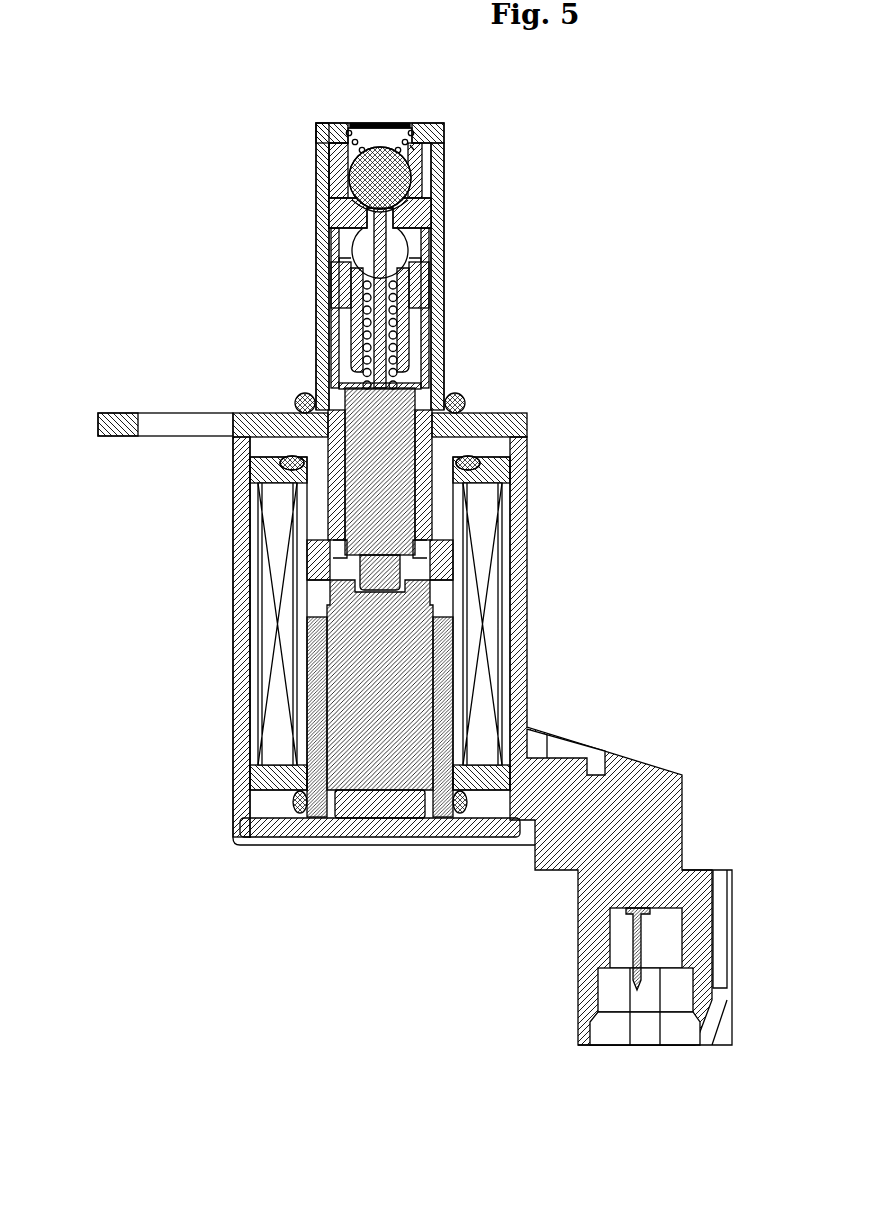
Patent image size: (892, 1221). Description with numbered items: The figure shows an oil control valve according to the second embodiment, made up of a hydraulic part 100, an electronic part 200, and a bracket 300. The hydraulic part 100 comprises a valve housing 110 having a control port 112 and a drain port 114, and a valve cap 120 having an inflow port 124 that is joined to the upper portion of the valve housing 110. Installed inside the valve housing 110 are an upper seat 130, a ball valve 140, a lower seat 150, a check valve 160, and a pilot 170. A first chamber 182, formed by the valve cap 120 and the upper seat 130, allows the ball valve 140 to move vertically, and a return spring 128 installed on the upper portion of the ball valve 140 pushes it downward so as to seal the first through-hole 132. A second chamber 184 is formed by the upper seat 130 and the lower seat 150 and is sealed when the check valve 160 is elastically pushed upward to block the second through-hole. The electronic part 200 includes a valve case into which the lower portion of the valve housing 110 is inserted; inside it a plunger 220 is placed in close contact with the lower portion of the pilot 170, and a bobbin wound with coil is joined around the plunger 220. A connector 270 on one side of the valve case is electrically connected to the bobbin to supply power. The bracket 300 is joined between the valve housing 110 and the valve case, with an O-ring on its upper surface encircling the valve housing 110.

The hydraulic part 100 is at (299, 105).
The valve housing 110 is at (322, 249).
The control port 112 is at (400, 242).
The drain port 114 is at (435, 331).
The valve cap 120 is at (336, 168).
The inflow port 124 is at (392, 122).
The return spring 128 is at (348, 141).
The upper seat 130 is at (420, 213).
The first through-hole 132 is at (360, 211).
The ball valve 140 is at (398, 172).
The lower seat 150 is at (420, 295).
The check valve 160 is at (356, 322).
The pilot 170 is at (402, 405).
The first chamber 182 is at (414, 148).
The second chamber 184 is at (350, 240).
The electronic part 200 is at (432, 727).
The plunger 220 is at (410, 678).
The connector 270 is at (732, 935).
The bracket 300 is at (98, 412).